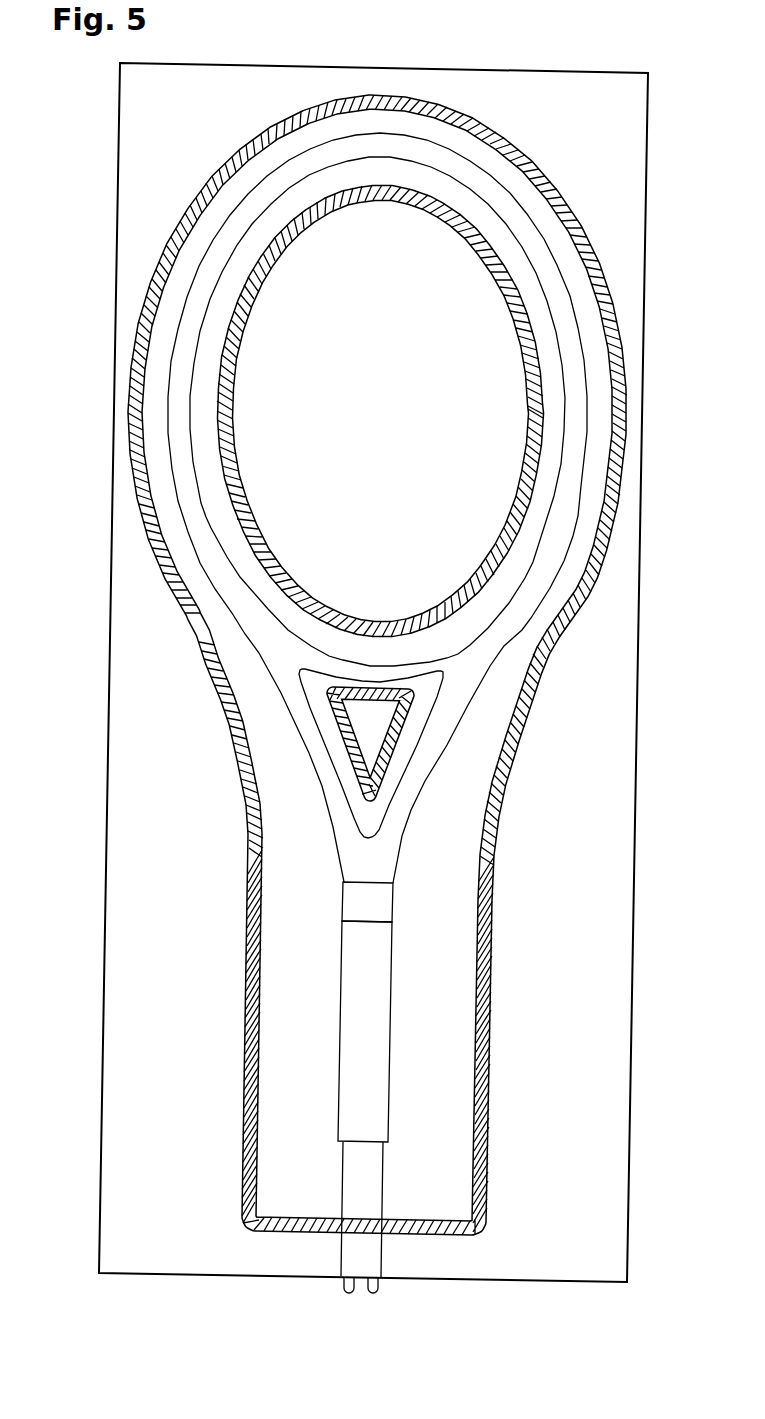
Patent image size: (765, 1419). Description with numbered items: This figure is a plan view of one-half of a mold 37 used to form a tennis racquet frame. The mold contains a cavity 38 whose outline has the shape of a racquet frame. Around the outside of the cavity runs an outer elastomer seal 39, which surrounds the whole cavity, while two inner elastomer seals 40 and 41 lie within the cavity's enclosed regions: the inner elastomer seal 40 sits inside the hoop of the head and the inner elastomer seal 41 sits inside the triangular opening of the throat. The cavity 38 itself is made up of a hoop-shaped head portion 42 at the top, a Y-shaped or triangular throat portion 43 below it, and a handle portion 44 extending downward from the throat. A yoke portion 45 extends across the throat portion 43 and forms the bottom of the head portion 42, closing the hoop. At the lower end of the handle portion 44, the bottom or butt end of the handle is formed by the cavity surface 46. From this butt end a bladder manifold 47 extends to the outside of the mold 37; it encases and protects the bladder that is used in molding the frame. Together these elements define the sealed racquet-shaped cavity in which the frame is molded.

The mold 37 is at (148, 1115).
The cavity 38 is at (392, 990).
The outer elastomer seal 39 is at (550, 652).
The inner elastomer seal 40 is at (250, 263).
The inner elastomer seal 41 is at (350, 743).
The hoop-shaped head portion 42 is at (567, 290).
The throat portion 43 is at (438, 746).
The handle portion 44 is at (342, 955).
The yoke portion 45 is at (349, 663).
The cavity surface 46 is at (389, 1146).
The bladder manifold 47 is at (342, 1188).